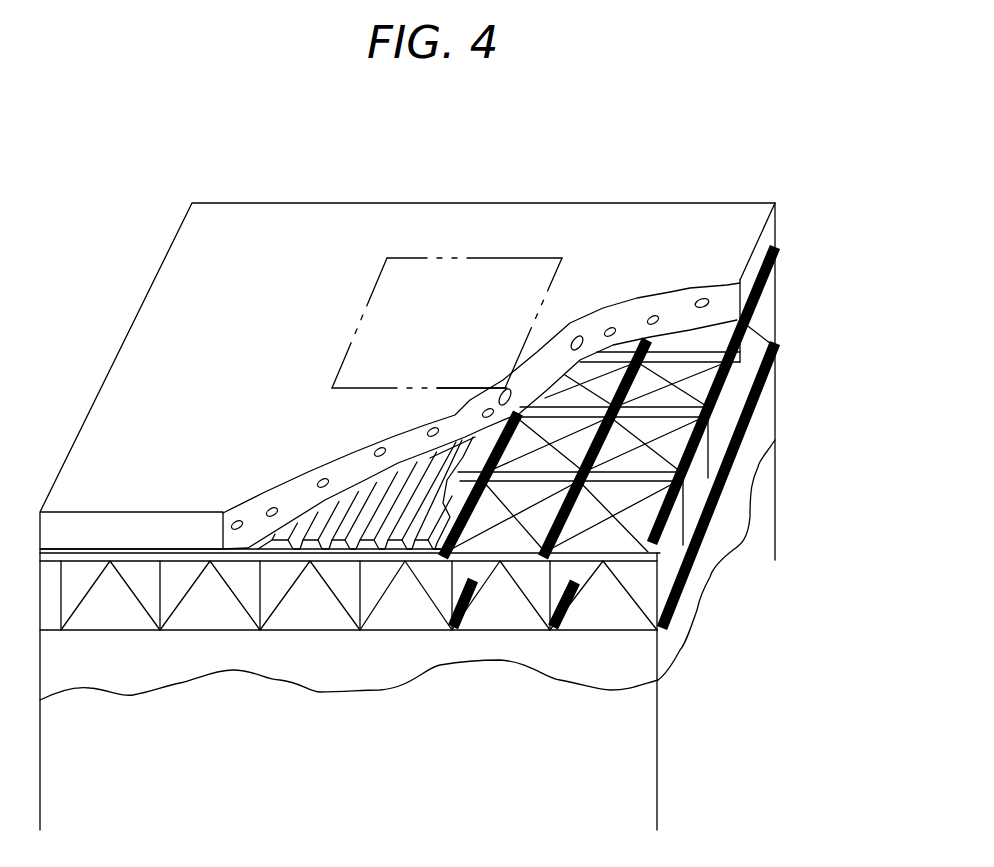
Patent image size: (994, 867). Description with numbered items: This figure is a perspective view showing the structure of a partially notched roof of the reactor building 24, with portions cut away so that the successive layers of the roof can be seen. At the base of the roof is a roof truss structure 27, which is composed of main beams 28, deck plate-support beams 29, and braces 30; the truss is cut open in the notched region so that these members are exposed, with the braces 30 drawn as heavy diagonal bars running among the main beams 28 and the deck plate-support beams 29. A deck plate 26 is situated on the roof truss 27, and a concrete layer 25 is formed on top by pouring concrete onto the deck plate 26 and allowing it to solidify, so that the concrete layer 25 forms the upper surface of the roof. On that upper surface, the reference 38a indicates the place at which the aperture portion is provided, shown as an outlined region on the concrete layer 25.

The reactor building 24 is at (782, 363).
The concrete layer 25 is at (605, 227).
The deck plate 26 is at (350, 520).
The roof truss structure 27 is at (825, 378).
The main beams 28 is at (640, 418).
The deck plate-support beams 29 is at (628, 478).
The braces 30 is at (628, 588).
The place at which the aperture portion is provided 38a is at (468, 257).